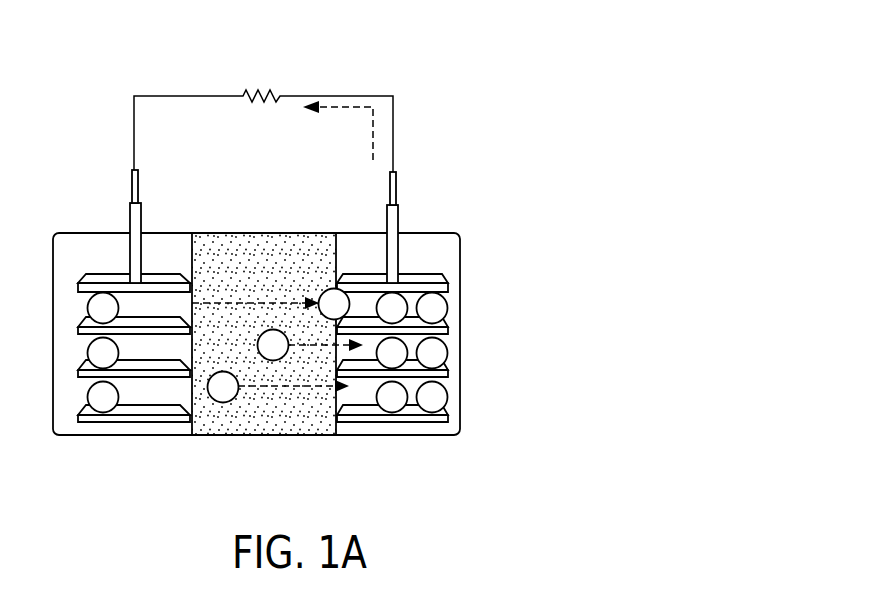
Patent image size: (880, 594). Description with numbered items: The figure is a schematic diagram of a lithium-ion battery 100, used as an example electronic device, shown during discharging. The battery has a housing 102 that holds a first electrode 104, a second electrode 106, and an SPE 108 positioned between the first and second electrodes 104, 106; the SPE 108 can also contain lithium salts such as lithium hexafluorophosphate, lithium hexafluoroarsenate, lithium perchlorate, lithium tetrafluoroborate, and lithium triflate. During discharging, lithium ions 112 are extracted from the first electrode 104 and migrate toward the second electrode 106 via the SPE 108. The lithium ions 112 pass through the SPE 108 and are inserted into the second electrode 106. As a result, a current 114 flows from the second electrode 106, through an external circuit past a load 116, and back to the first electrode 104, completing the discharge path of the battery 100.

The lithium-ion battery 100 is at (474, 73).
The housing 102 is at (462, 412).
The first electrode 104 is at (152, 238).
The second electrode 106 is at (408, 238).
The SPE 108 is at (315, 427).
The lithium ions 112 is at (272, 361).
The current 114 is at (373, 133).
The load 116 is at (283, 92).